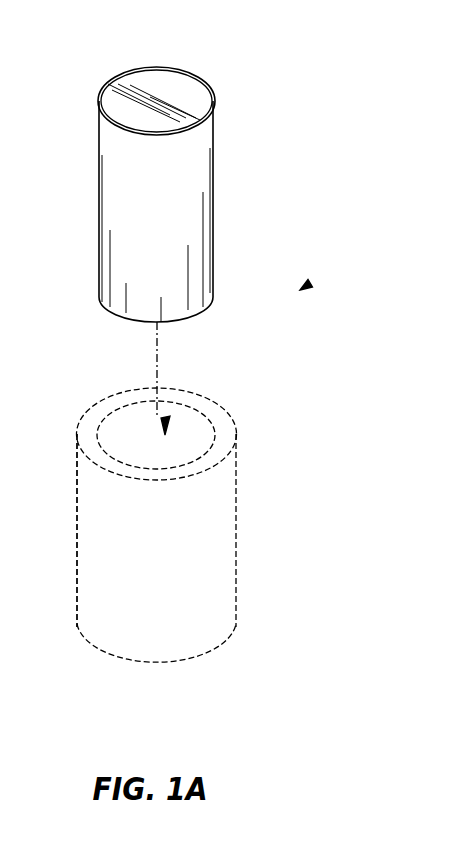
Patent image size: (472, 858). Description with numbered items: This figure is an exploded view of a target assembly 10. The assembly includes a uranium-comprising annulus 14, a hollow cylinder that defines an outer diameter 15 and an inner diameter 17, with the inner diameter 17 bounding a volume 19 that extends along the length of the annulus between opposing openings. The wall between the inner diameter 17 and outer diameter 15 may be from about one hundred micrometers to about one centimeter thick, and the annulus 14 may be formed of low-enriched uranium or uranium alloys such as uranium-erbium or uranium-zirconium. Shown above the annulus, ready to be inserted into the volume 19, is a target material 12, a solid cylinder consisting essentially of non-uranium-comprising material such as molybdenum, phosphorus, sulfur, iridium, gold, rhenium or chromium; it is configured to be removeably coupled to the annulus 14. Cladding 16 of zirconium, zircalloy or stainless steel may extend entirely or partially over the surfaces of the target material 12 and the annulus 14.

The target assembly 10 is at (302, 289).
The target material 12 is at (178, 88).
The uranium-comprising annulus 14 is at (238, 542).
The outer diameter 15 is at (231, 418).
The cladding 16 is at (97, 193).
The inner diameter 17 is at (104, 420).
The volume 19 is at (170, 417).